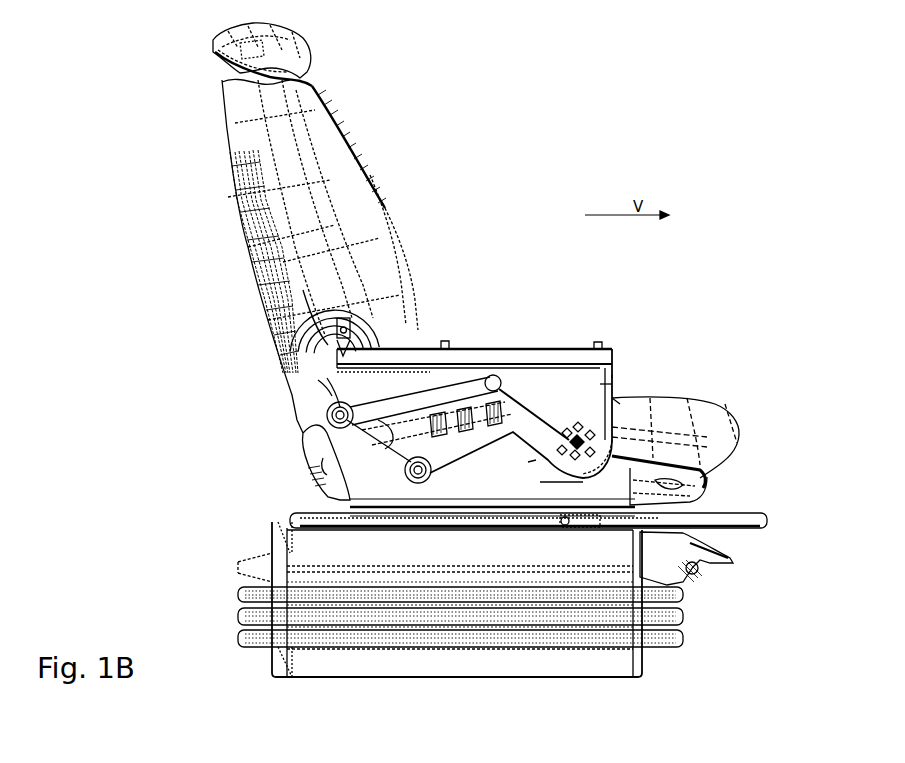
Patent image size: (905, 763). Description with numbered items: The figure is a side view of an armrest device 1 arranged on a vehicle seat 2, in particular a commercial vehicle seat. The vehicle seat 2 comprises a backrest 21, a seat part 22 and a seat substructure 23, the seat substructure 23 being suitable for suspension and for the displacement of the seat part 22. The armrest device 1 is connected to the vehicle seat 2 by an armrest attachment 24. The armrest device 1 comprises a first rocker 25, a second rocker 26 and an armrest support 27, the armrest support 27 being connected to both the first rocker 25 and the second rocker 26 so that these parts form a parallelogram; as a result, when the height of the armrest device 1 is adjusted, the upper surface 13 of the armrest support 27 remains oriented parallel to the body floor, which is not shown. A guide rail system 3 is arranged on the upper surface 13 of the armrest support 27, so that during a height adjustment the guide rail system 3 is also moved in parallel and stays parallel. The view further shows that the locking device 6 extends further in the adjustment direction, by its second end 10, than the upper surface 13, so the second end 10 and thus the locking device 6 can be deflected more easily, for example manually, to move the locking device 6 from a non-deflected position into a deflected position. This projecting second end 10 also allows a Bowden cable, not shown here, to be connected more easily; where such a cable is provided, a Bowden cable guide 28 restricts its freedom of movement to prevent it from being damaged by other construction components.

The armrest device 1 is at (603, 300).
The vehicle seat 2 is at (643, 148).
The guide rail system 3 is at (645, 342).
The locking device 6 is at (597, 457).
The second end 10 is at (612, 365).
The upper surface 13 is at (537, 365).
The backrest 21 is at (243, 118).
The seat part 22 is at (723, 428).
The seat substructure 23 is at (238, 614).
The armrest attachment 24 is at (325, 458).
The first rocker 25 is at (323, 383).
The second rocker 26 is at (483, 447).
The armrest support 27 is at (602, 387).
The Bowden cable guide 28 is at (618, 400).